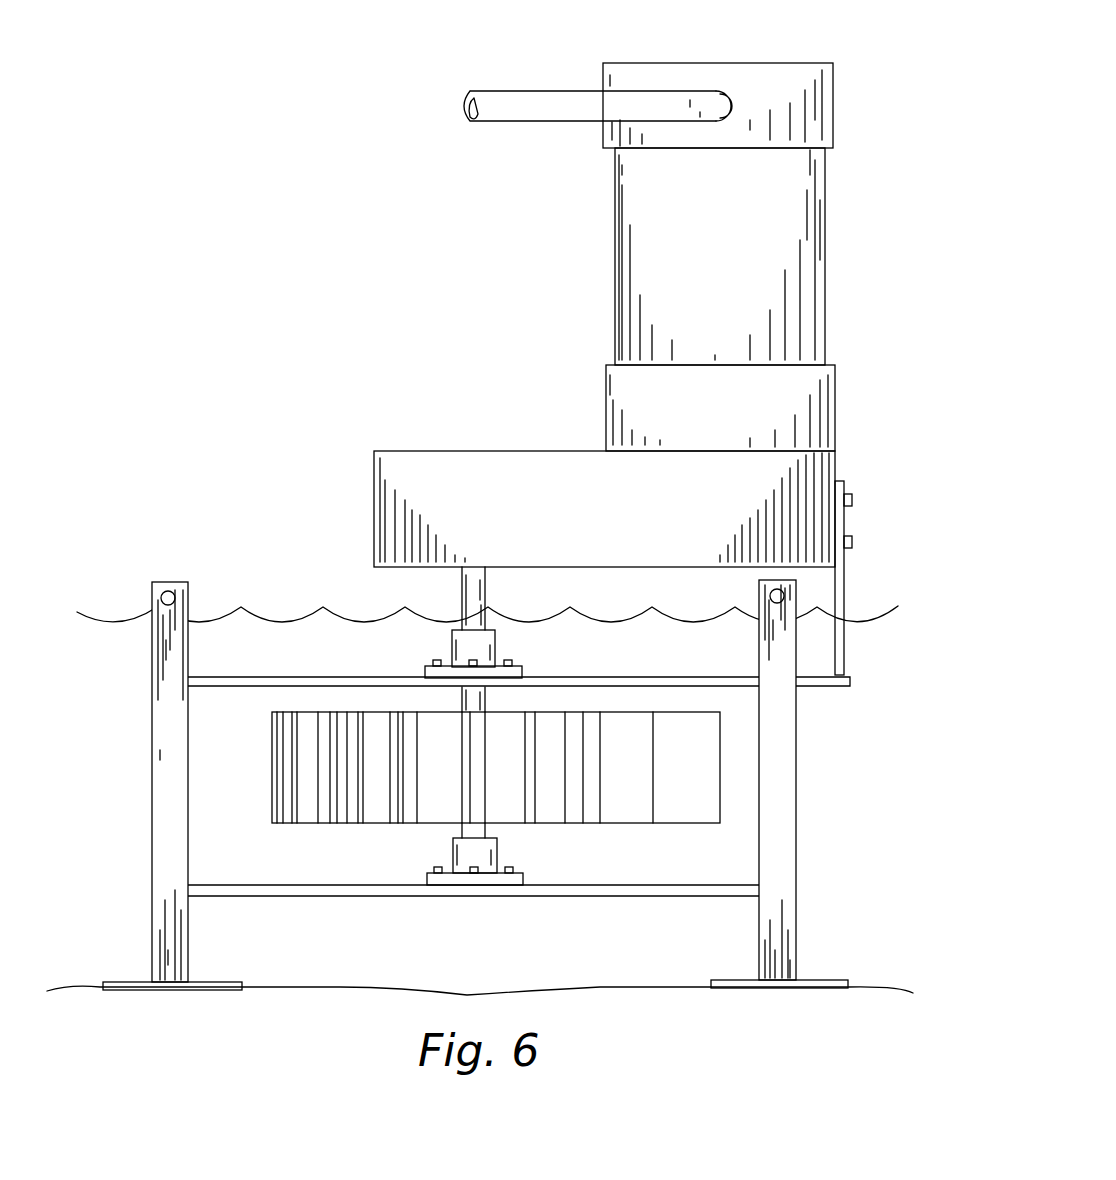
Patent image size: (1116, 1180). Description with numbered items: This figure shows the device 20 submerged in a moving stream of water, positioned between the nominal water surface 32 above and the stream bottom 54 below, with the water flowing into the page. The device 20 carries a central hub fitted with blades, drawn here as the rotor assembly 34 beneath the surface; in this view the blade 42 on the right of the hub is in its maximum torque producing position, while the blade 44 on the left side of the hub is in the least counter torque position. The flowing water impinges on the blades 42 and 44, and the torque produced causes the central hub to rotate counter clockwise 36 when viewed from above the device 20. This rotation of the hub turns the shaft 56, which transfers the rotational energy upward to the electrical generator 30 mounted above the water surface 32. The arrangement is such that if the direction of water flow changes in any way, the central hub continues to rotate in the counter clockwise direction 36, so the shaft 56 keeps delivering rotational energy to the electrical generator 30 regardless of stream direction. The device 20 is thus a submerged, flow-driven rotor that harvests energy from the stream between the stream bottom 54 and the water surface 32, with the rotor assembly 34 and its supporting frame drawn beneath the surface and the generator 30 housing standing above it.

The device 20 is at (375, 487).
The electrical generator 30 is at (615, 222).
The nominal water surface 32 is at (77, 611).
The rotor drum 34 is at (352, 710).
The counter clockwise rotation 36 is at (595, 645).
The blade 42 is at (720, 768).
The blade 44 is at (272, 778).
The stream bottom 54 is at (342, 987).
The shaft 56 is at (463, 602).